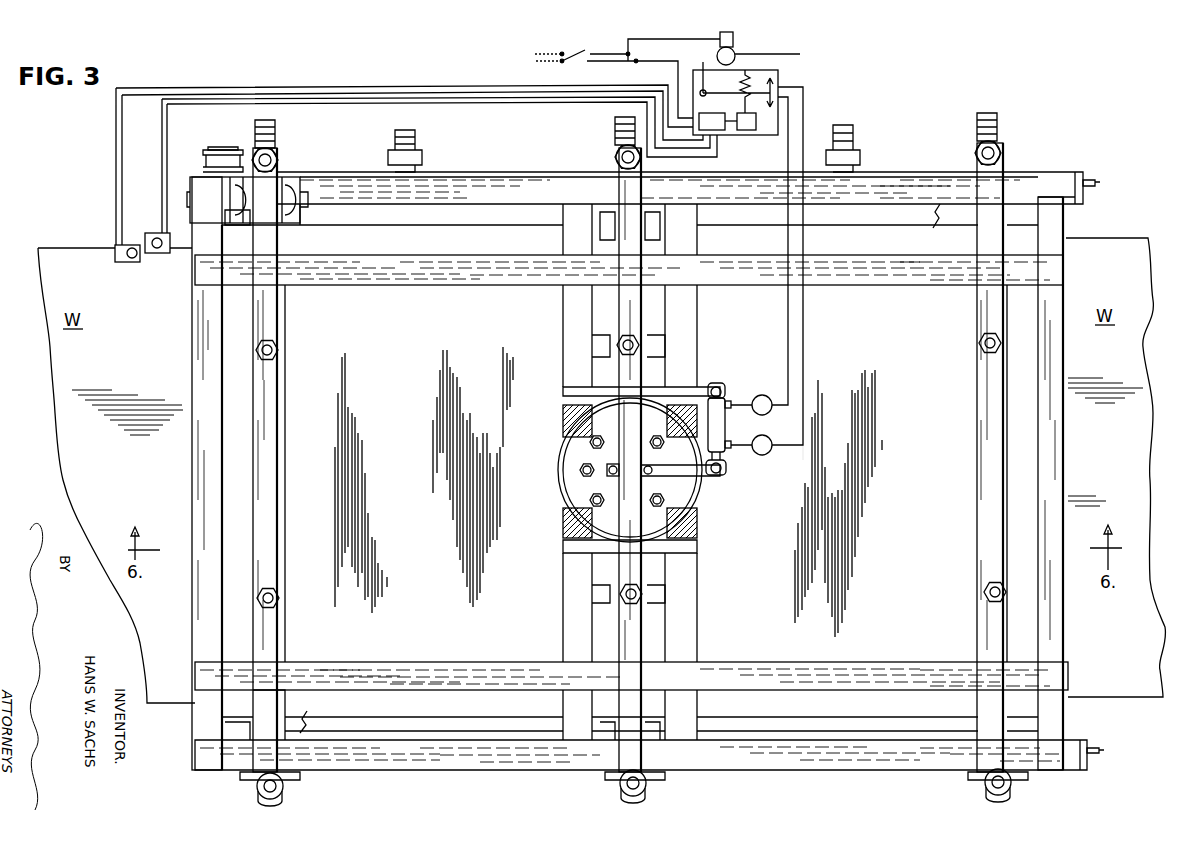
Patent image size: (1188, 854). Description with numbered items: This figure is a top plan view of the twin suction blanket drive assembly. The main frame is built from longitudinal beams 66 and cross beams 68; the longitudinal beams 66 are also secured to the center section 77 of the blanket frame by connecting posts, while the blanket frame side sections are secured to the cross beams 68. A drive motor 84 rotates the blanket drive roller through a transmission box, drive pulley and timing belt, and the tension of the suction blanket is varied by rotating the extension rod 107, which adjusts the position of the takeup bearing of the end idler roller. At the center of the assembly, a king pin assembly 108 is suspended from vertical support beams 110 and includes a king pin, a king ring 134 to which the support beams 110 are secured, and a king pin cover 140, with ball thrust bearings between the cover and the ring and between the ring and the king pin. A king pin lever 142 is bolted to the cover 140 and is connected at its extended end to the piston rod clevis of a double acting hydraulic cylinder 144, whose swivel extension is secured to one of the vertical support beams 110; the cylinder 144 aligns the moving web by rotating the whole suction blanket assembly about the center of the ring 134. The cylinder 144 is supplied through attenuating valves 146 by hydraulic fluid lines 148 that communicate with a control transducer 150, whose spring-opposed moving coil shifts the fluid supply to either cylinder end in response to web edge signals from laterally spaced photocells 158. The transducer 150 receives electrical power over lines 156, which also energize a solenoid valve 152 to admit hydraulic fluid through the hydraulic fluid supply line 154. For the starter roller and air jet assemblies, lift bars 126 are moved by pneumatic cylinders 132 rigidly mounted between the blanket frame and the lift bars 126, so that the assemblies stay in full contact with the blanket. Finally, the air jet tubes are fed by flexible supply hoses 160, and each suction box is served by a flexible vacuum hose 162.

The longitudinal beams 66 is at (383, 287).
The cross beams 68 is at (197, 325).
The center section 77 is at (565, 619).
The drive motor 84 is at (297, 214).
The extension rod 107 is at (1088, 184).
The king pin assembly 108 is at (550, 451).
The vertical support beams 110 is at (697, 522).
The lift bars 126 is at (284, 462).
The pneumatic cylinders 132 is at (280, 352).
The king ring 134 is at (558, 470).
The king pin cover 140 is at (568, 485).
The king pin lever 142 is at (690, 465).
The double acting hydraulic cylinder 144 is at (725, 424).
The attenuating valves 146 is at (792, 436).
The hydraulic fluid lines 148 is at (806, 298).
The control transducer 150 is at (778, 80).
The solenoid valve 152 is at (735, 50).
The hydraulic fluid supply line 154 is at (800, 54).
The lines 156 is at (535, 56).
The photocells 158 is at (129, 245).
The flexible supply hoses 160 is at (276, 136).
The flexible vacuum hose 162 is at (408, 140).